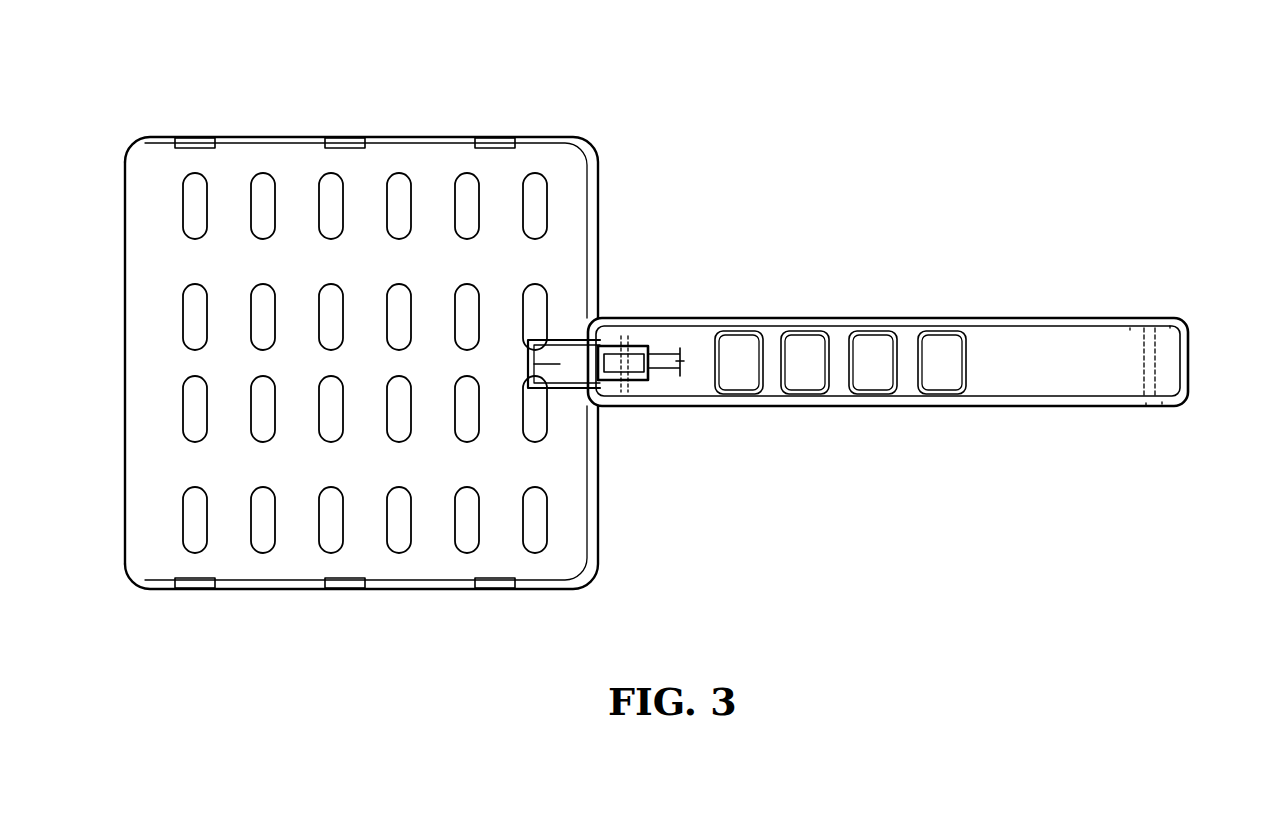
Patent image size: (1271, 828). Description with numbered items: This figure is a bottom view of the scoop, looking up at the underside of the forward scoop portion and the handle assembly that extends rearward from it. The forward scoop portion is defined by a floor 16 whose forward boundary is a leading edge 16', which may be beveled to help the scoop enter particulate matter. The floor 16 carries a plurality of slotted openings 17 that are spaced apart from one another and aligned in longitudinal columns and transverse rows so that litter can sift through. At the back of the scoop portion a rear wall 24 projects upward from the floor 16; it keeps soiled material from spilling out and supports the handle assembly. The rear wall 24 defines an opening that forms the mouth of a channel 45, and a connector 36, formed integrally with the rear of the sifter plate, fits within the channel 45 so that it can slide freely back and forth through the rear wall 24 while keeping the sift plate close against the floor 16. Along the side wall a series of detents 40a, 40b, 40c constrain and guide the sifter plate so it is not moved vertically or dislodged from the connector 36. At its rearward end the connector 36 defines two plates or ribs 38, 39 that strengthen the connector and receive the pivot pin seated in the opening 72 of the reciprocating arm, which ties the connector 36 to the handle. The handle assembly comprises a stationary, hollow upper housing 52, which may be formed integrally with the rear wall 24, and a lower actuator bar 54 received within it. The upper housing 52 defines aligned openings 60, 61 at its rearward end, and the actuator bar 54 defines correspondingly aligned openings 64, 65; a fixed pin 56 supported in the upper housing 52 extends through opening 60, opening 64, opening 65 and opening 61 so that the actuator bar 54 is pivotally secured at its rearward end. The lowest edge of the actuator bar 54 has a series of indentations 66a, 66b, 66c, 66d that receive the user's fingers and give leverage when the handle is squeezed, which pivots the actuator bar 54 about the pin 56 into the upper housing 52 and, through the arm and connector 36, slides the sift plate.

The floor 16 is at (361, 391).
The leading edge 16' is at (131, 326).
The slotted openings 17 is at (537, 172).
The rear wall 24 is at (598, 500).
The connector 36 is at (545, 363).
The connector plate 38 is at (608, 377).
The connector plate 39 is at (612, 348).
The detent 40a is at (192, 585).
The detent 40b is at (343, 585).
The detent 40c is at (495, 585).
The channel 45 is at (545, 340).
The upper housing 52 is at (1010, 403).
The actuator bar 54 is at (1013, 325).
The pin 56 is at (1152, 328).
The opening 60 is at (1148, 402).
The opening 61 is at (1143, 328).
The opening 64 is at (1170, 325).
The opening 65 is at (1160, 402).
The indentation 66a is at (735, 365).
The indentation 66b is at (800, 367).
The indentation 66c is at (863, 367).
The indentation 66d is at (930, 367).
The opening 72 is at (622, 352).